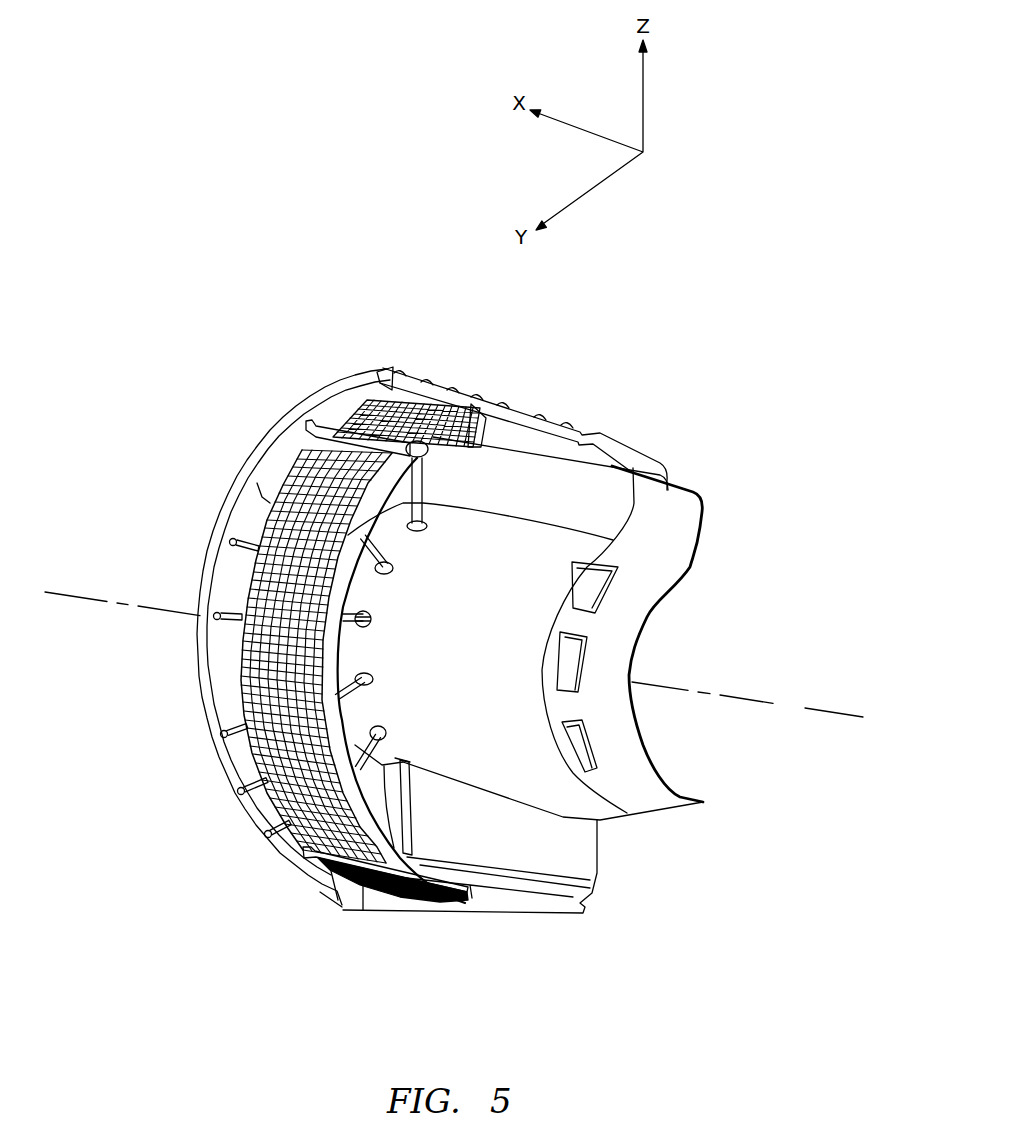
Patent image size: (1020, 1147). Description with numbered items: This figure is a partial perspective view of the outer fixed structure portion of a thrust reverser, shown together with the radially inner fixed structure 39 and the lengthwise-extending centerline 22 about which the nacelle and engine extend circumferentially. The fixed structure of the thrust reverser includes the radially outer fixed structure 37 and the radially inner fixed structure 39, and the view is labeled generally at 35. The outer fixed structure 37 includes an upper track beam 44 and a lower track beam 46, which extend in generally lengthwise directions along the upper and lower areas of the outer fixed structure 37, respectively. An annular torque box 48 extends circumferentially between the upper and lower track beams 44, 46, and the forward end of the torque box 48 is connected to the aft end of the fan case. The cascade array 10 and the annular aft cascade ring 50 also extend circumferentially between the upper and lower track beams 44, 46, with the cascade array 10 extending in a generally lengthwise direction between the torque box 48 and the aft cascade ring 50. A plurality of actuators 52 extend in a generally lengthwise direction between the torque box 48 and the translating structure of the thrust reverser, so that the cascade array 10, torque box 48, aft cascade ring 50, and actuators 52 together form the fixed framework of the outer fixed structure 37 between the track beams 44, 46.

The cascade array 10 is at (265, 763).
The centerline 22 is at (787, 703).
The assembly 35 is at (199, 327).
The radially outer fixed structure 37 is at (297, 404).
The radially inner fixed structure 39 is at (552, 556).
The upper track beam 44 is at (468, 386).
The lower track beam 46 is at (557, 908).
The annular torque box 48 is at (227, 562).
The annular aft cascade ring 50 is at (447, 429).
The actuators 52 is at (371, 412).